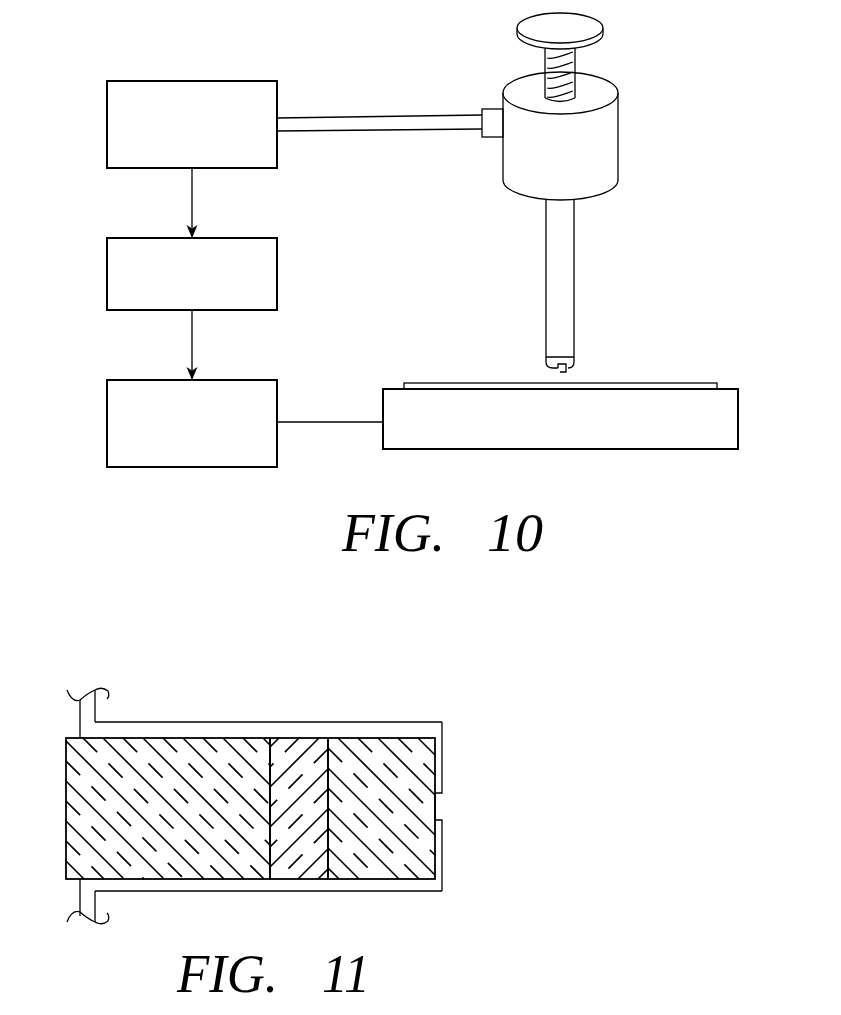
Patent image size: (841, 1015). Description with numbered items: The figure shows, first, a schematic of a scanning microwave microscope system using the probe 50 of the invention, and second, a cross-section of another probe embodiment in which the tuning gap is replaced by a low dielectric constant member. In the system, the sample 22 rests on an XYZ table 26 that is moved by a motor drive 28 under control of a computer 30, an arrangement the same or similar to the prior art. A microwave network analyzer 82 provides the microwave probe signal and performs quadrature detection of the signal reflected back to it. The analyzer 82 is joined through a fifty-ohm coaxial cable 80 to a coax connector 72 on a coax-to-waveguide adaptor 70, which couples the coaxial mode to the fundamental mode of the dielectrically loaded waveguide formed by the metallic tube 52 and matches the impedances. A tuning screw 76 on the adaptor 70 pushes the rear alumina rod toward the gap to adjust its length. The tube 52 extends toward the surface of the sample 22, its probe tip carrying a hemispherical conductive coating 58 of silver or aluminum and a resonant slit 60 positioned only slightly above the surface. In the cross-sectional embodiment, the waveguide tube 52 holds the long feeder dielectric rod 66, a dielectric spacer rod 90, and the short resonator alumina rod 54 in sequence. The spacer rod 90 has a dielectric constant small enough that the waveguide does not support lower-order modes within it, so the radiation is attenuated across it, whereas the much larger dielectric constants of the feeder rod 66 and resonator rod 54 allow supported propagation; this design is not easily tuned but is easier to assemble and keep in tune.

In FIG. 10, the microwave network analyzer 82 is at (118, 96).
In FIG. 10, the computer 30 is at (118, 252).
In FIG. 10, the motor drive 28 is at (118, 395).
In FIG. 10, the XYZ table 26 is at (729, 402).
In FIG. 10, the sample 22 is at (697, 383).
In FIG. 10, the coaxial cable 80 is at (376, 122).
In FIG. 10, the coax connector 72 is at (490, 112).
In FIG. 10, the coax-to-waveguide adaptor 70 is at (600, 142).
In FIG. 10, the tuning screw 76 is at (586, 22).
In FIG. 10, the probe 50 is at (609, 191).
In FIG. 10, the metallic tube 52 is at (553, 258).
In FIG. 11, the metallic tube 52 is at (148, 729).
In FIG. 10, the hemispherical conductive coating 58 is at (553, 362).
In FIG. 11, the hemispherical conductive coating 58 is at (438, 762).
In FIG. 10, the resonant slit 60 is at (560, 369).
In FIG. 11, the resonant slit 60 is at (437, 800).
In FIG. 11, the feeder dielectric rod 66 is at (228, 742).
In FIG. 11, the dielectric spacer rod 90 is at (308, 740).
In FIG. 11, the alumina rod 54 is at (378, 745).